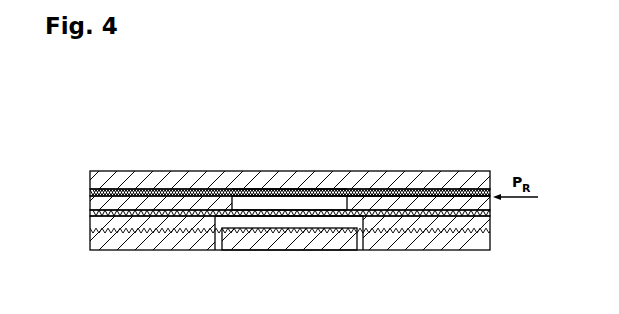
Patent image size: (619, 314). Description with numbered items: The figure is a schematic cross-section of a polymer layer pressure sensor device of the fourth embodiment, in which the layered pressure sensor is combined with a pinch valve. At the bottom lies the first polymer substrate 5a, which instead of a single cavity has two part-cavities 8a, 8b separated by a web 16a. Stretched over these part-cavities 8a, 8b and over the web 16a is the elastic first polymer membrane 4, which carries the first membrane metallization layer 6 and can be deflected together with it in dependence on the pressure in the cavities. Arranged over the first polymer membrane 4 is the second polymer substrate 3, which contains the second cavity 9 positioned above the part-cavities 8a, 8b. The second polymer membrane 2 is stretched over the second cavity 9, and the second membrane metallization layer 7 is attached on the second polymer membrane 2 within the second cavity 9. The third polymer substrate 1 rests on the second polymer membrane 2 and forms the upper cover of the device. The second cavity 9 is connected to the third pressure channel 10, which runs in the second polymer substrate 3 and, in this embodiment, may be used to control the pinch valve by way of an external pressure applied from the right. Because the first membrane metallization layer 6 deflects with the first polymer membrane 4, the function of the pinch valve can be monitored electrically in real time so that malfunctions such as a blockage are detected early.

The third polymer substrate 1 is at (89, 177).
The second polymer membrane 2 is at (89, 192).
The second polymer substrate 3 is at (89, 202).
The first polymer membrane 4 is at (89, 213).
The first polymer substrate 5a is at (89, 238).
The first membrane metallization layer 6 is at (264, 228).
The second membrane metallization layer 7 is at (262, 190).
The first part-cavity 8a is at (237, 218).
The second part-cavity 8b is at (334, 218).
The second cavity 9 is at (283, 200).
The third pressure channel 10 is at (383, 195).
The web 16a is at (291, 216).